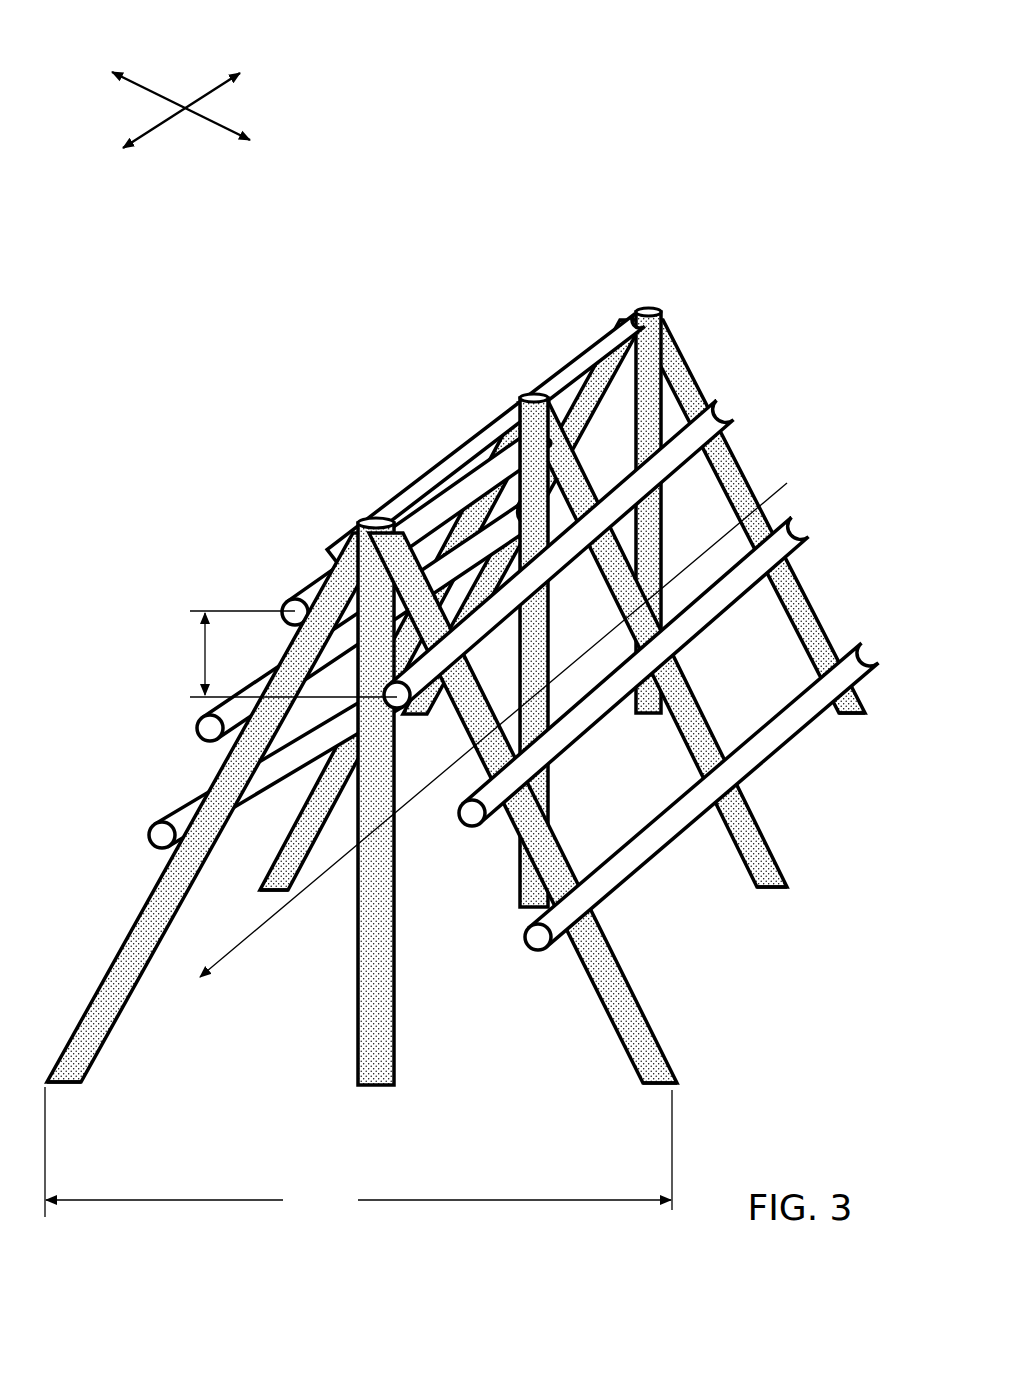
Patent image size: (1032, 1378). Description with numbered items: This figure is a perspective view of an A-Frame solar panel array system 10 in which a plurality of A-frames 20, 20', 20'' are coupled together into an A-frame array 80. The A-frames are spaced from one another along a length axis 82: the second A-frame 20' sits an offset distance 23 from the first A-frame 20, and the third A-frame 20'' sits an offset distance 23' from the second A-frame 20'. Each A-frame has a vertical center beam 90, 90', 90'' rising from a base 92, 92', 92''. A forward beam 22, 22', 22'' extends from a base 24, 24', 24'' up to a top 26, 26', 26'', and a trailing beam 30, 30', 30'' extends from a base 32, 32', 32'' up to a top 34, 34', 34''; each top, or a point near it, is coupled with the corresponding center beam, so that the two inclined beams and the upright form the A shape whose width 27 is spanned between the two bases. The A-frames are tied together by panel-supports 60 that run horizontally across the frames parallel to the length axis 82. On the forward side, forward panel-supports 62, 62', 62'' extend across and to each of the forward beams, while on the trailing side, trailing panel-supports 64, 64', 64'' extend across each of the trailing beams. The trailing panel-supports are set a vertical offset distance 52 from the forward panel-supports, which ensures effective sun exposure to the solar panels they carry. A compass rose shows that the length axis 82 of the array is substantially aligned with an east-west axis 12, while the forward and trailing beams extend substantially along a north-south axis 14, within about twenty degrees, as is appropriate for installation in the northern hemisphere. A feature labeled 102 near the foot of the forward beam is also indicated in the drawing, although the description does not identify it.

The A-Frame solar panel array system 10 is at (688, 195).
The east-west axis 12 is at (153, 128).
The north-south axis 14 is at (222, 116).
The A-frame 20 is at (440, 801).
The A-frame 20' is at (700, 650).
The A-frame 20'' is at (719, 505).
The forward beam 22 is at (565, 808).
The forward beam 22' is at (712, 645).
The forward beam 22'' is at (771, 516).
The offset distance 23 is at (665, 787).
The offset distance 23' is at (739, 717).
The base 24 is at (636, 1136).
The base 24' is at (791, 947).
The base 24'' is at (873, 749).
The top 26 is at (492, 659).
The top 26' is at (587, 457).
The top 26'' is at (744, 350).
The width 27 is at (358, 1152).
The trailing beam 30 is at (212, 807).
The trailing beam 30' is at (398, 646).
The trailing beam 30'' is at (523, 517).
The base 32 is at (84, 1126).
The base 32' is at (295, 930).
The base 32'' is at (420, 751).
The top 34 is at (288, 502).
The top 34' is at (445, 391).
The top 34'' is at (552, 294).
The vertical offset distance 52 is at (205, 655).
The panel-supports 60 is at (660, 903).
The forward panel-support 62 is at (702, 796).
The forward panel-support 62' is at (634, 671).
The forward panel-support 62'' is at (613, 545).
The trailing panel-support 64 is at (245, 766).
The trailing panel-support 64' is at (309, 621).
The trailing panel-support 64'' is at (415, 527).
The A-frame array 80 is at (460, 467).
The length axis 82 is at (233, 952).
The center beam 90 is at (435, 917).
The center beam 90' is at (599, 835).
The center beam 90'' is at (693, 519).
The base 92 is at (402, 1126).
The base 92' is at (494, 947).
The base 92'' is at (632, 748).
The ground 102 is at (613, 1100).